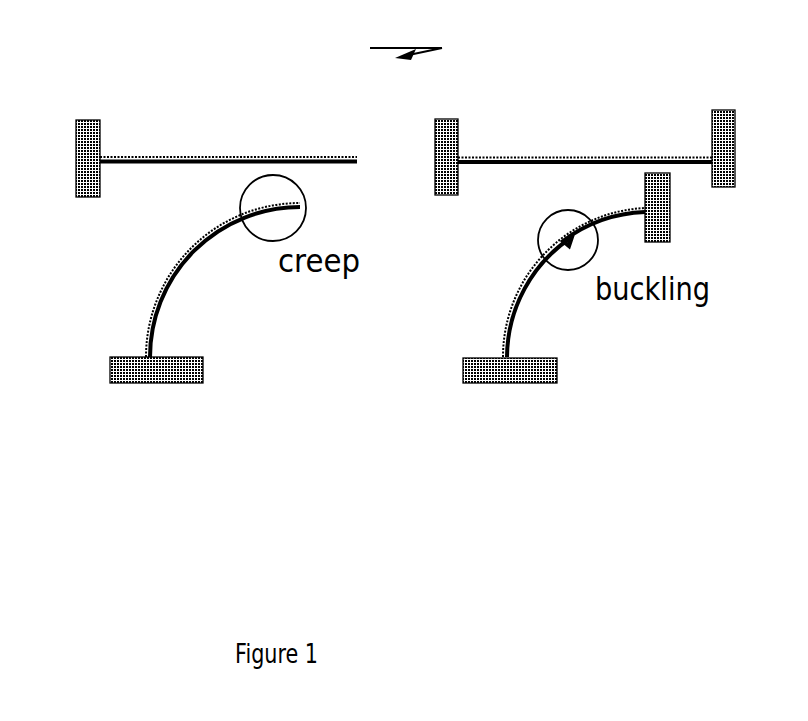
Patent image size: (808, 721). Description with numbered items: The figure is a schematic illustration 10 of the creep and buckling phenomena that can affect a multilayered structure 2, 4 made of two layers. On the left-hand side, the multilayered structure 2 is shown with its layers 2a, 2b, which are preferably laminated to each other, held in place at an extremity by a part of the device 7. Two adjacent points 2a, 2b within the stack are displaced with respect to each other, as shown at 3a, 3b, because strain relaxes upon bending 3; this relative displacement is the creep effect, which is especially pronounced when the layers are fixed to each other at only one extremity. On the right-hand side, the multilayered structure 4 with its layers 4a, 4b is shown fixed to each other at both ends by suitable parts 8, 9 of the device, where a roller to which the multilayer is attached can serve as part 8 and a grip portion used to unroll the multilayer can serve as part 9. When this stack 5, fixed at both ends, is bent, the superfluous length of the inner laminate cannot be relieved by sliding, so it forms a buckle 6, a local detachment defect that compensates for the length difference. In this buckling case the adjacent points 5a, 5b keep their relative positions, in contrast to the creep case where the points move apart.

The multilayered structure 2 is at (178, 157).
The layer 2a is at (325, 152).
The layer 2b is at (325, 184).
The bending 3 is at (157, 297).
The displaced point 3a is at (260, 186).
The displaced point 3b is at (273, 218).
The multilayered structure 4 is at (510, 143).
The layer 4a is at (681, 155).
The layer 4b is at (681, 170).
The bent stack 5 is at (510, 323).
The adjacent point 5a is at (620, 186).
The adjacent point 5b is at (625, 220).
The buckle 6 is at (568, 238).
The device part 7 is at (167, 383).
The device part 8 is at (520, 383).
The device part 9 is at (730, 122).
The schematic illustration 10 is at (406, 32).